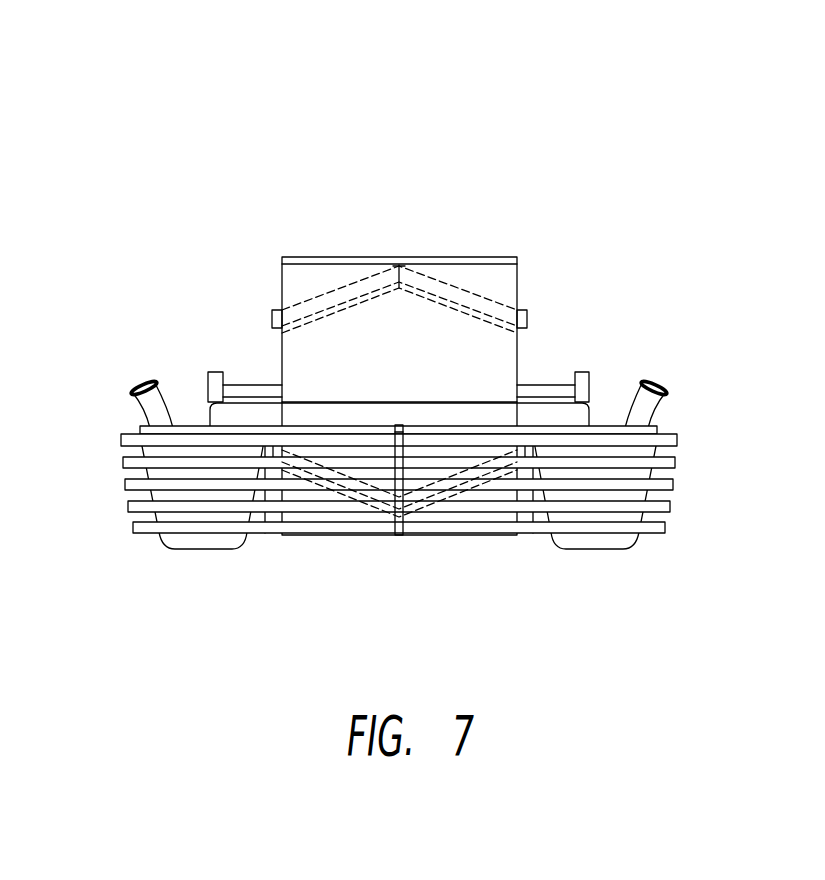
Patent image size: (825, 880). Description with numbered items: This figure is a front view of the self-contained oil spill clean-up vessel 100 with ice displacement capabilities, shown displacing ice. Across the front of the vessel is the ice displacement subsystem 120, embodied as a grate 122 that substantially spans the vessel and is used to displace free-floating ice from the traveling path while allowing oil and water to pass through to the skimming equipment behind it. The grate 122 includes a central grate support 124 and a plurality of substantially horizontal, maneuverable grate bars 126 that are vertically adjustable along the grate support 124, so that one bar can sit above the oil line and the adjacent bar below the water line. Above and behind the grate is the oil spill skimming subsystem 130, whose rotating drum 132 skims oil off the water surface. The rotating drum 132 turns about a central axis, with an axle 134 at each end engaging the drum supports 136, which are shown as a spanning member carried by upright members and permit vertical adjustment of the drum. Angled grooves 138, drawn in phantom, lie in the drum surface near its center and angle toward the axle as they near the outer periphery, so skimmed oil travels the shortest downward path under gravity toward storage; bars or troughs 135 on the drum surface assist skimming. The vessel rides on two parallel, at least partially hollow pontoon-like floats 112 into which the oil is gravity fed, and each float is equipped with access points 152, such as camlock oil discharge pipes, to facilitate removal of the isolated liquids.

The self-contained oil spill clean-up vessel 100 is at (707, 150).
The oil spill skimming subsystem 130 is at (445, 255).
The rotating drum 132 is at (320, 278).
The bars or troughs 135 is at (378, 258).
The angled grooves 138 is at (472, 293).
The drum supports 136 is at (217, 372).
The axle 134 is at (538, 385).
The ice displacement subsystem 120 is at (500, 570).
The grate 122 is at (693, 420).
The grate support 124 is at (408, 471).
The grate bars 126 is at (277, 540).
The pontoon-like floats 112 is at (202, 550).
The access points 152 is at (140, 380).